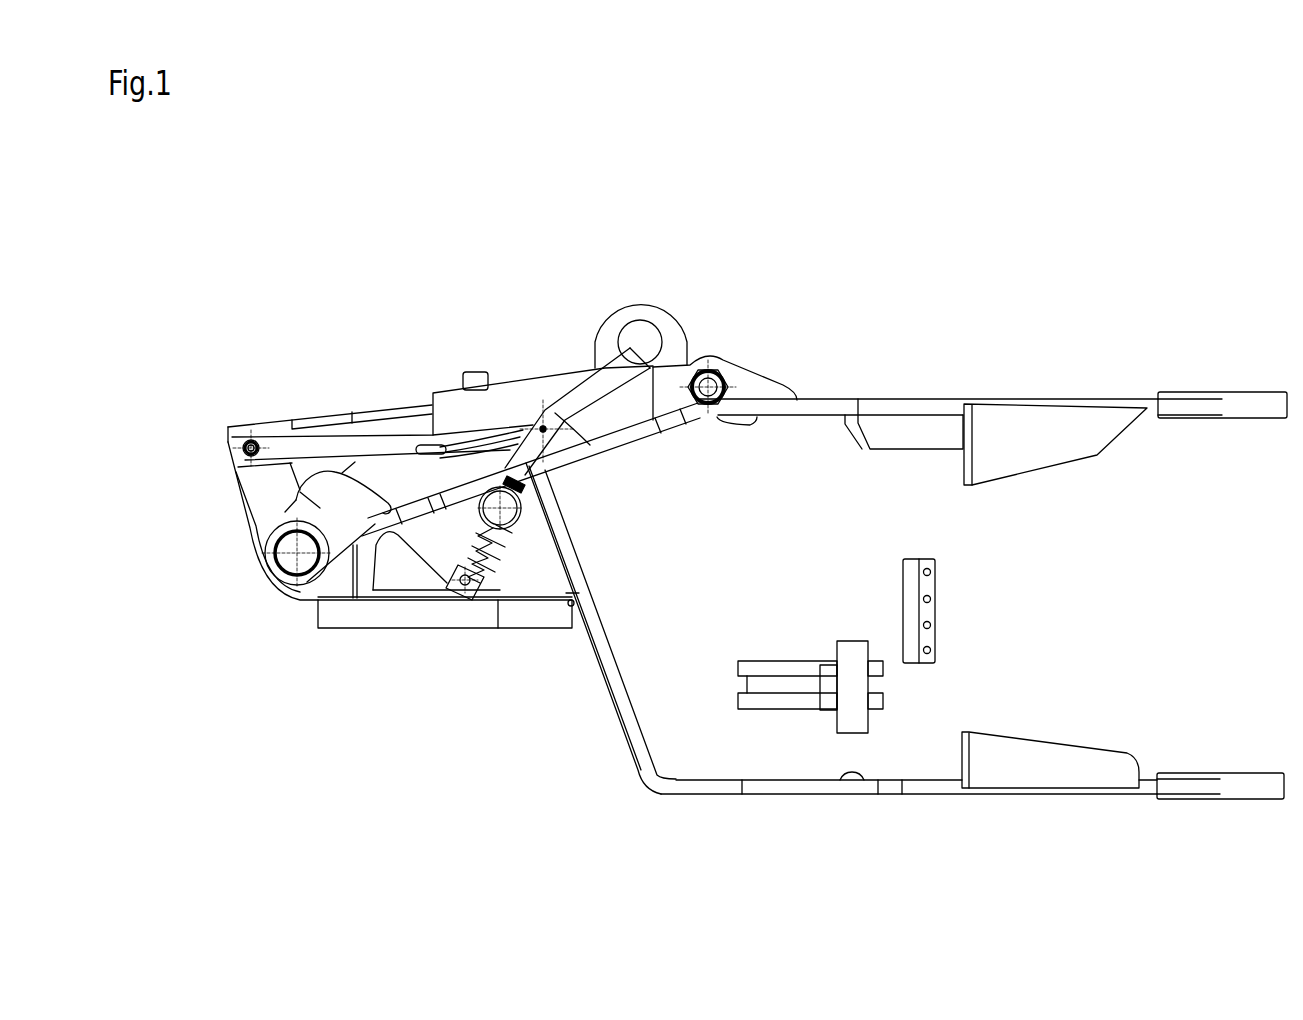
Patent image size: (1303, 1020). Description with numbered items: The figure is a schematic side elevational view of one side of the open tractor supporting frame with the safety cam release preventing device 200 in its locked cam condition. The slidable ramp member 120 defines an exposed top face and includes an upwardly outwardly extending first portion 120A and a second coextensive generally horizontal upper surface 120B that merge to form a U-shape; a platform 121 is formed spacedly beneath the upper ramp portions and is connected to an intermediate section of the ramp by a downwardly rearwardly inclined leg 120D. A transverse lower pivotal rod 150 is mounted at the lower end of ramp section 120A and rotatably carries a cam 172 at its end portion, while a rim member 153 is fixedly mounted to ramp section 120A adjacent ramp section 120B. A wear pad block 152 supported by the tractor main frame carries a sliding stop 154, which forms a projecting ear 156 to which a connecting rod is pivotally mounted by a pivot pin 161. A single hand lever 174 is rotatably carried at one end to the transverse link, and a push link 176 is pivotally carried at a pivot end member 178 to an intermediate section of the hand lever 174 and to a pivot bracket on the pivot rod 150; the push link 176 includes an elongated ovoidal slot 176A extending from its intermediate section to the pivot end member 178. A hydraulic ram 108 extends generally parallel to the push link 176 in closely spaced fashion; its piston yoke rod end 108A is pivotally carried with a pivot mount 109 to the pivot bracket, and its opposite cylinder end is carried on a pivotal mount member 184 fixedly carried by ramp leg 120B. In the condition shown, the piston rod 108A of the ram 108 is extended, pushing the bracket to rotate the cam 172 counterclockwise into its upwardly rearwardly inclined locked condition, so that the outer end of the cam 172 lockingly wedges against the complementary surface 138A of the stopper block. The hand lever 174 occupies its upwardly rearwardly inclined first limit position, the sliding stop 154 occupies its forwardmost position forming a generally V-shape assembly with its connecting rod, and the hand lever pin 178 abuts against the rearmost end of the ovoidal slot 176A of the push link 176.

The hydraulic ram 108 is at (499, 392).
The piston yoke rod end 108A is at (398, 472).
The pivot mount 109 is at (248, 447).
The slidable ramp member 120 is at (867, 396).
The first portion of ramp member 120A is at (343, 475).
The second generally horizontal upper surface 120B is at (933, 400).
The downwardly rearwardly inclined leg 120D is at (623, 718).
The platform 121 is at (855, 778).
The complementary surface of stopper block 138A is at (355, 430).
The transverse lower pivotal rod 150 is at (293, 553).
The wear pad block 152 is at (543, 615).
The rim member 153 is at (654, 297).
The sliding stop 154 is at (398, 575).
The projecting ear 156 is at (455, 598).
The pivot pin 161 is at (505, 578).
The cam 172 is at (332, 508).
The hand lever 174 is at (562, 395).
The push link 176 is at (292, 445).
The elongated ovoidal slot 176A is at (445, 488).
The pivot end member 178 is at (553, 412).
The pivotal mount member 184 is at (727, 360).
The safety cam release preventing device 200 is at (395, 757).